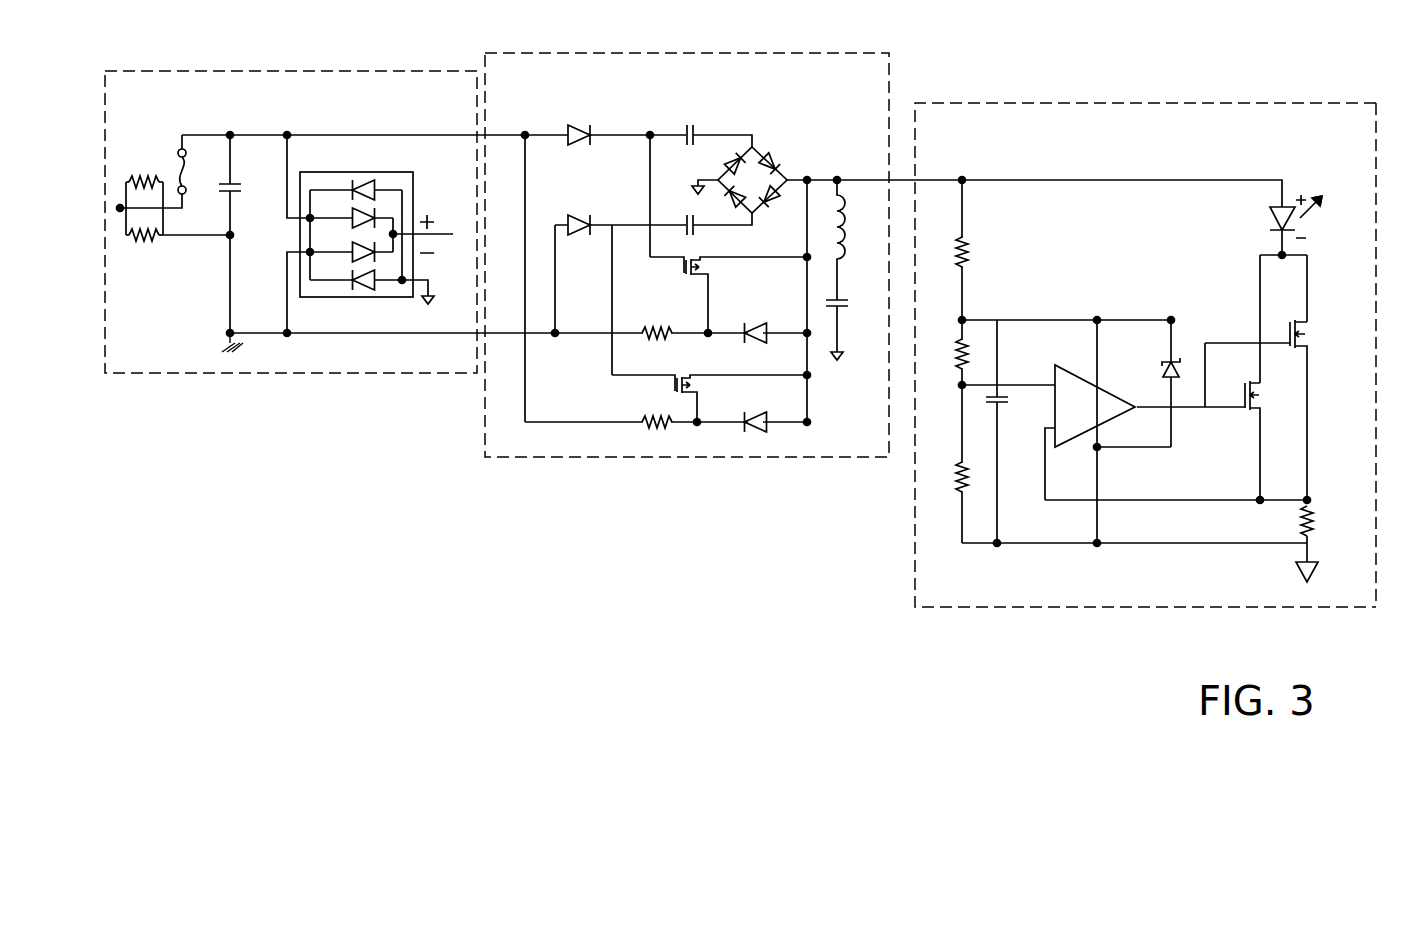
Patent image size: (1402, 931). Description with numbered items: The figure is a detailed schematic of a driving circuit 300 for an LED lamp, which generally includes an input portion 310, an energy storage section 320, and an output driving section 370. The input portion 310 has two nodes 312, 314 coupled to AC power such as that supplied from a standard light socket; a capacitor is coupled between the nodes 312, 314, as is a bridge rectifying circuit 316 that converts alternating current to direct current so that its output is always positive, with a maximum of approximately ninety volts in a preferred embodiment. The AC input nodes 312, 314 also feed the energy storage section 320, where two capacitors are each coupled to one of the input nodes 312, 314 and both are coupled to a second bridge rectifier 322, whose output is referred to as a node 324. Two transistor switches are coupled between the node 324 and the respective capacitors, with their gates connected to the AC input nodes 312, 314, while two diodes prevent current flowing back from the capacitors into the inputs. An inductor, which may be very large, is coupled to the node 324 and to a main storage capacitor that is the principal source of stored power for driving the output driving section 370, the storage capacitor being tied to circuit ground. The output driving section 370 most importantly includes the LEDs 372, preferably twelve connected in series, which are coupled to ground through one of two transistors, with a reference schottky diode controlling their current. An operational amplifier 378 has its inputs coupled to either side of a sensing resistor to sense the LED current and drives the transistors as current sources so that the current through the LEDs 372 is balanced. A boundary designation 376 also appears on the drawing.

The driving circuit 300 is at (741, 310).
The input portion 310 is at (295, 222).
The AC input node 312 is at (232, 135).
The AC input node 314 is at (230, 333).
The bridge rectifying circuit 316 is at (390, 206).
The energy storage section 320 is at (687, 255).
The second bridge rectifier 322 is at (763, 151).
The node 324 is at (808, 180).
The output driving section 370 is at (1133, 355).
The LEDs 372 is at (1271, 211).
The output driver boundary 376 is at (1368, 355).
The operational amplifier 378 is at (1082, 393).